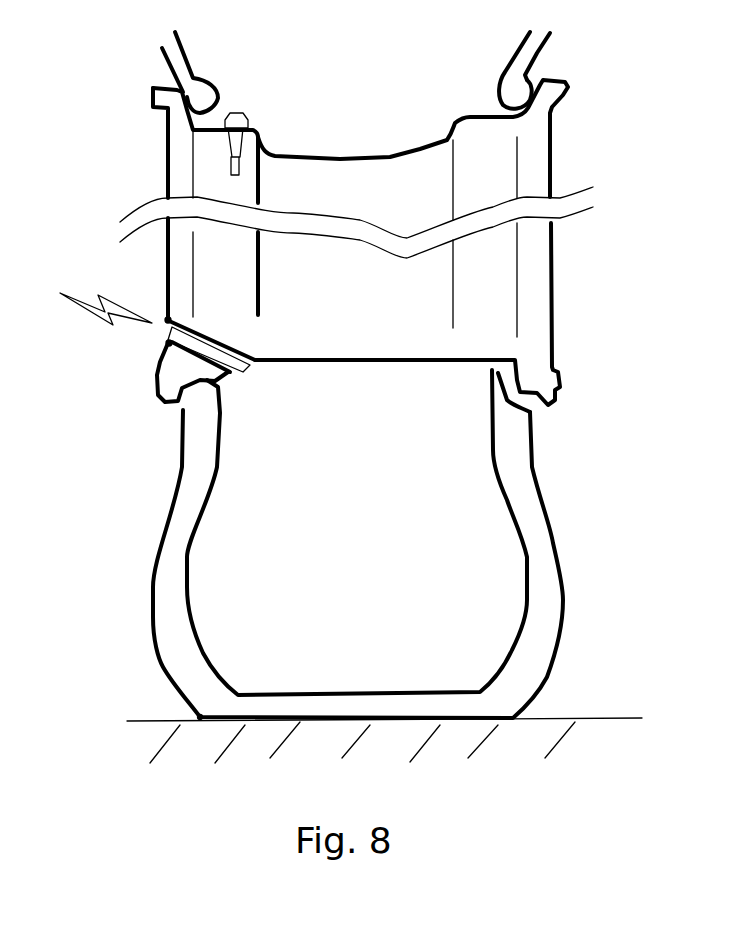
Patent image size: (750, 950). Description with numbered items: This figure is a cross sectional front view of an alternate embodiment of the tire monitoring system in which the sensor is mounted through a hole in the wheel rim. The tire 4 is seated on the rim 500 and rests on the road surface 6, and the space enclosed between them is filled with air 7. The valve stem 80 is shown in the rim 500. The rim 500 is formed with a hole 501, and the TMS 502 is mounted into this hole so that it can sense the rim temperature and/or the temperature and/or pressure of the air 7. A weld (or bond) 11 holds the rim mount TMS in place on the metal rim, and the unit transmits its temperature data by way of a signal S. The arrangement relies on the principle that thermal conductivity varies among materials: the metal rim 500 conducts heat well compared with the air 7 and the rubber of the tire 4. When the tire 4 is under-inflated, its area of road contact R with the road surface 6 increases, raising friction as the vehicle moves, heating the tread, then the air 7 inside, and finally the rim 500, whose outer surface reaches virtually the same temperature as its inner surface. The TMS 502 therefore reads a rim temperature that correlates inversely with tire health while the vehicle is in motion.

The tire 4 is at (495, 57).
The road surface 6 is at (607, 717).
The air 7 is at (370, 508).
The weld (or bond) 11 is at (160, 313).
The valve stem 80 is at (228, 153).
The rim 500 is at (568, 298).
The hole 501 is at (203, 335).
The TMS 502 is at (257, 370).
The signal S is at (93, 322).
The road contact R is at (200, 717).